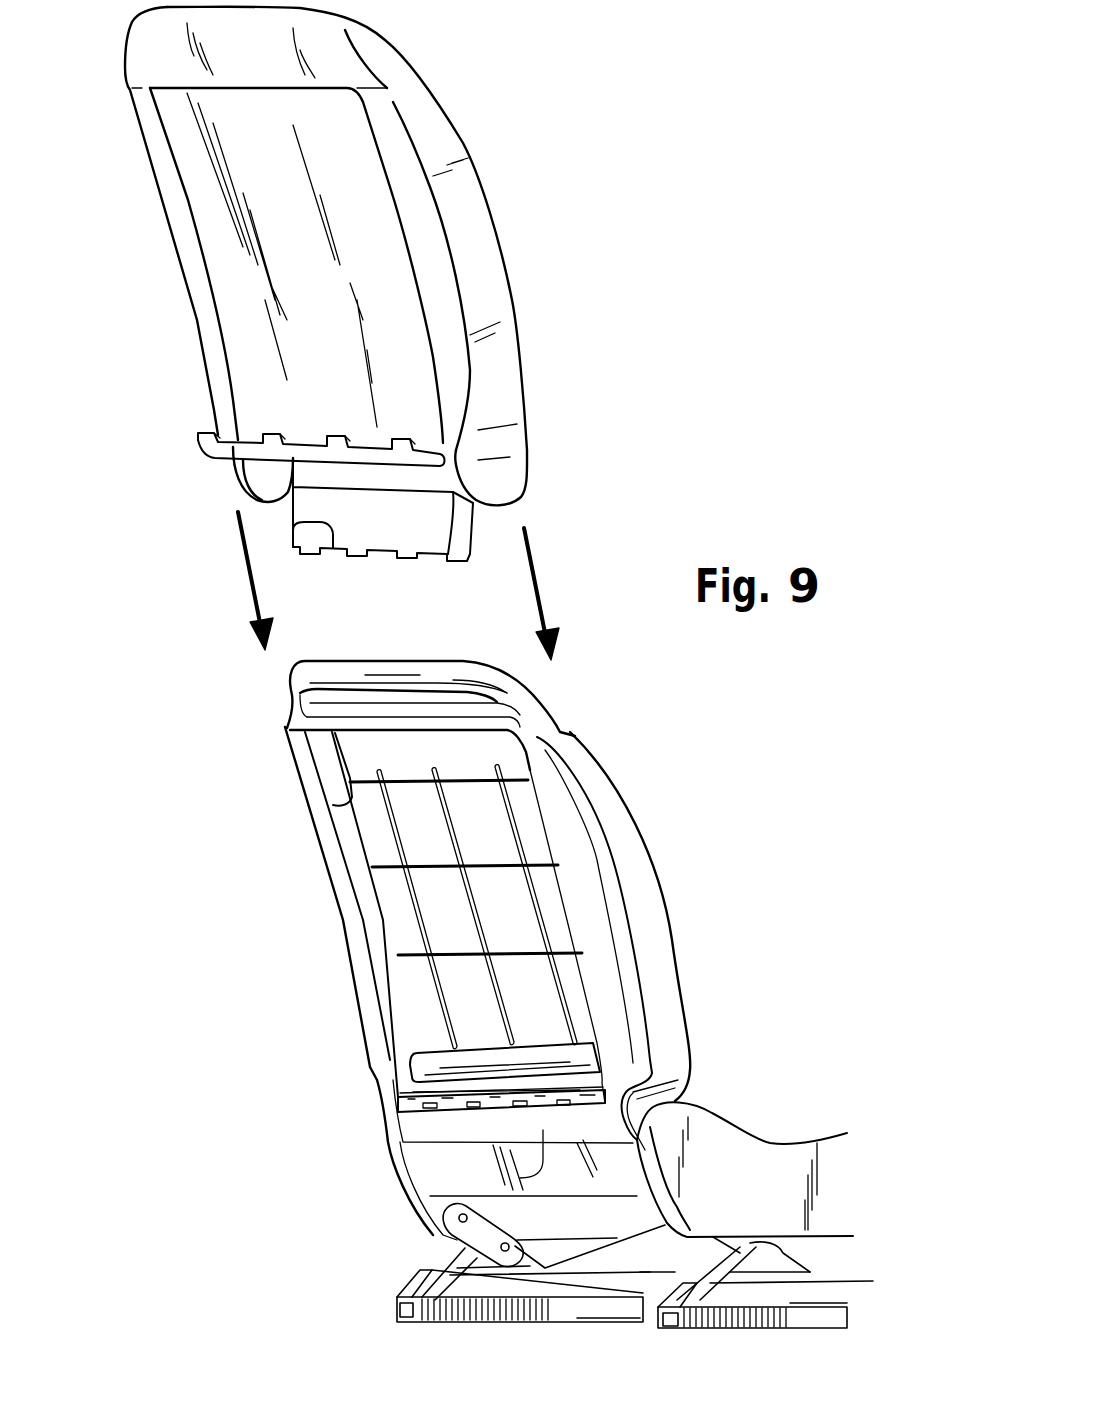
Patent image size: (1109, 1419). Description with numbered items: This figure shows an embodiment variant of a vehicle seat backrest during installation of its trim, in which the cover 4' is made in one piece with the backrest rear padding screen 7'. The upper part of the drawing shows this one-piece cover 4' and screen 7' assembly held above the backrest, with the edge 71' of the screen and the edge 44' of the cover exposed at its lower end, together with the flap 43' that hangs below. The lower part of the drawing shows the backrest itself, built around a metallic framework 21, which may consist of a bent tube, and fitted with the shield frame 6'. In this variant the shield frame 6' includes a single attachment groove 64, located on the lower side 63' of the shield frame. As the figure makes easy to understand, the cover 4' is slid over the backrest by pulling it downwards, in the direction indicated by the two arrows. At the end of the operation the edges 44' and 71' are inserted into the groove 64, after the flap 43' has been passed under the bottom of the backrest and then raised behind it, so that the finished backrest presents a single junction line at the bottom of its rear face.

The cover 4' is at (348, 256).
The backrest rear padding screen 7' is at (284, 265).
The edge 71' is at (321, 419).
The edge 44' is at (247, 540).
The flap 43' is at (410, 538).
The metallic framework 21 is at (380, 667).
The shield frame 6' is at (569, 983).
The attachment groove 64 is at (463, 1113).
The lower side 63' is at (431, 1182).